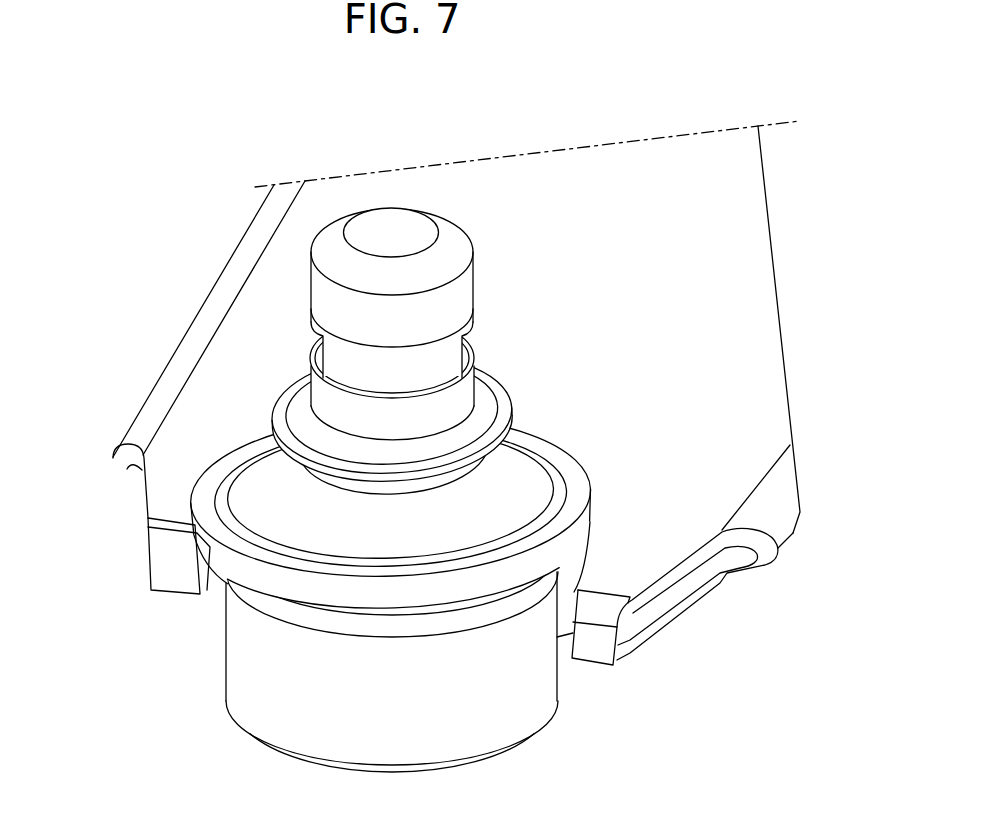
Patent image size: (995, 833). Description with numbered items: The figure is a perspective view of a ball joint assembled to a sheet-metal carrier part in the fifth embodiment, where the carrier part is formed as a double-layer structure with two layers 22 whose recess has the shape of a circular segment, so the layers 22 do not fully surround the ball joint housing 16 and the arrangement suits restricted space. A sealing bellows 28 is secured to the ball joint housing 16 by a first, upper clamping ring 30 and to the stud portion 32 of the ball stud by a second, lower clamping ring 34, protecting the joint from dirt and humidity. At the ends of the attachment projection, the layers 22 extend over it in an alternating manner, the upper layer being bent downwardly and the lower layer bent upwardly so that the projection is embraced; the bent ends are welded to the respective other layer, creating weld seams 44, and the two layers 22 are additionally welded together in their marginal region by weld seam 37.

The ball joint housing 16 is at (305, 685).
The layers 22 is at (738, 386).
The sealing bellows 28 is at (283, 528).
The first, upper clamping ring 30 is at (269, 603).
The stud portion 32 is at (338, 300).
The second, lower clamping ring 34 is at (303, 467).
The weld seam 37 is at (792, 536).
The weld seams 44 is at (170, 517).